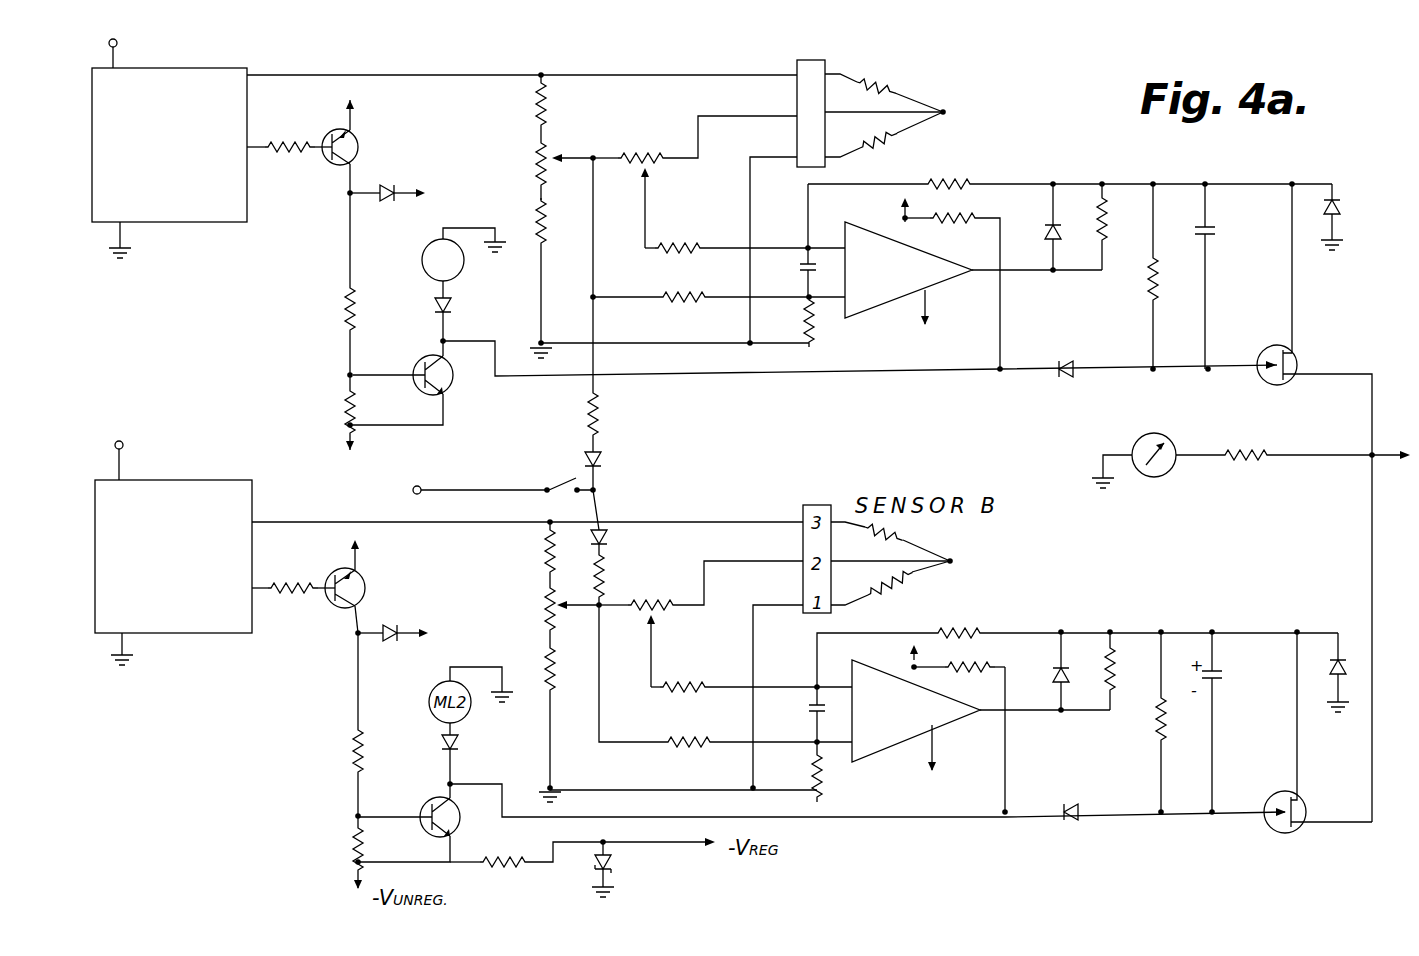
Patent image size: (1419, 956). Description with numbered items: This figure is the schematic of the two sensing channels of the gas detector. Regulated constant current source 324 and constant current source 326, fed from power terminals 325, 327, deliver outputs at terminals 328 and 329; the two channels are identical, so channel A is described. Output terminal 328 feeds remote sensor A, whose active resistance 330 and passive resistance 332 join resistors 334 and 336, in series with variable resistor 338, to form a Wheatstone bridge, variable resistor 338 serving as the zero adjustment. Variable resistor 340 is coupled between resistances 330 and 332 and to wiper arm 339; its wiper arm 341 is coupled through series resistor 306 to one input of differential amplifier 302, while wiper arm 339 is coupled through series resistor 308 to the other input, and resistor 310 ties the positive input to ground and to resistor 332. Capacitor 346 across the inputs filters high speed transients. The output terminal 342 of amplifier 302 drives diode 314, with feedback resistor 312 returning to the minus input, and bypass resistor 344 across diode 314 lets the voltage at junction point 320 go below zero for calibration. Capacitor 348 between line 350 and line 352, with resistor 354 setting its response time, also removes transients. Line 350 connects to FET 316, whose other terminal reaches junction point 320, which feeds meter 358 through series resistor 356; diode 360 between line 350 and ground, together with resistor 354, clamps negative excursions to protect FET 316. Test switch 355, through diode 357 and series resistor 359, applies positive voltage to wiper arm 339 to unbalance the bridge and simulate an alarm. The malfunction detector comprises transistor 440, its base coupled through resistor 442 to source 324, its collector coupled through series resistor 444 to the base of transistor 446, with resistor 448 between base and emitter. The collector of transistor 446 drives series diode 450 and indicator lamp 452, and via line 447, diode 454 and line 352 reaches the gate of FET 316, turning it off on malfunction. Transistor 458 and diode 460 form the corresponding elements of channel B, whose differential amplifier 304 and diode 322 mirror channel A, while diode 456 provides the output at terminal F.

The differential amplifier 302 is at (938, 292).
The differential amplifier 304 is at (896, 760).
The series resistor 306 is at (668, 244).
The series resistor 308 is at (708, 290).
The resistor 310 is at (815, 328).
The feedback resistor 312 is at (945, 180).
The diode 314 is at (1047, 228).
The FET 316 is at (1298, 360).
The junction point 320 is at (1369, 454).
The diode 322 is at (1052, 670).
The regulated constant current source 324 is at (182, 222).
The terminal 325 is at (135, 58).
The regulated constant current source 326 is at (162, 633).
The terminal 327 is at (125, 466).
The output terminal 328 is at (292, 75).
The output terminal 329 is at (266, 520).
The active resistance 330 is at (900, 92).
The passive resistance 332 is at (892, 146).
The resistor 334 is at (537, 91).
The resistor 336 is at (536, 230).
The variable resistor 338 is at (536, 156).
The wiper arm 339 is at (568, 156).
The variable resistor 340 is at (624, 150).
The wiper arm 341 is at (650, 178).
The output terminal 342 is at (985, 252).
The bypass resistor 344 is at (1108, 226).
The capacitor 346 is at (795, 268).
The capacitor 348 is at (1215, 232).
The output line 350 is at (1115, 184).
The line 352 is at (1182, 374).
The resistor 354 is at (1148, 290).
The test switch 355 is at (565, 492).
The series resistor 356 is at (1245, 468).
The diode 357 is at (604, 462).
The meter 358 is at (1155, 478).
The series resistor 359 is at (600, 412).
The diode 360 is at (1342, 208).
The transistor 440 is at (360, 150).
The resistor 442 is at (292, 150).
The series resistor 444 is at (346, 307).
The transistor 446 is at (452, 390).
The line 447 is at (735, 372).
The resistor 448 is at (346, 396).
The series diode 450 is at (452, 302).
The indicator lamp 452 is at (423, 262).
The diode 454 is at (1080, 380).
The diode 456 is at (390, 202).
The transistor 458 is at (366, 590).
The diode 460 is at (386, 648).